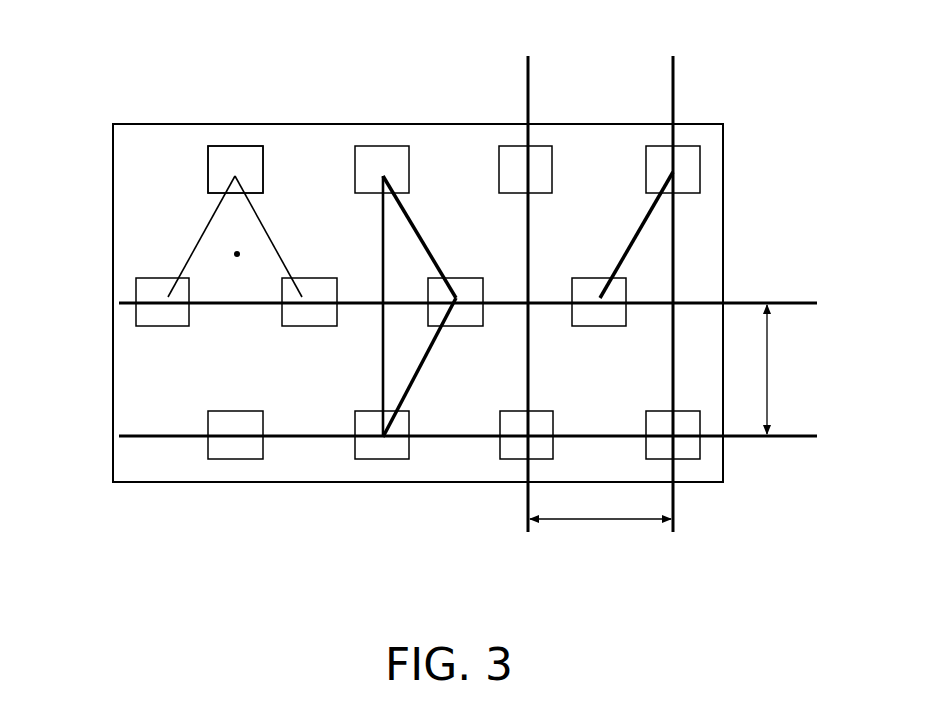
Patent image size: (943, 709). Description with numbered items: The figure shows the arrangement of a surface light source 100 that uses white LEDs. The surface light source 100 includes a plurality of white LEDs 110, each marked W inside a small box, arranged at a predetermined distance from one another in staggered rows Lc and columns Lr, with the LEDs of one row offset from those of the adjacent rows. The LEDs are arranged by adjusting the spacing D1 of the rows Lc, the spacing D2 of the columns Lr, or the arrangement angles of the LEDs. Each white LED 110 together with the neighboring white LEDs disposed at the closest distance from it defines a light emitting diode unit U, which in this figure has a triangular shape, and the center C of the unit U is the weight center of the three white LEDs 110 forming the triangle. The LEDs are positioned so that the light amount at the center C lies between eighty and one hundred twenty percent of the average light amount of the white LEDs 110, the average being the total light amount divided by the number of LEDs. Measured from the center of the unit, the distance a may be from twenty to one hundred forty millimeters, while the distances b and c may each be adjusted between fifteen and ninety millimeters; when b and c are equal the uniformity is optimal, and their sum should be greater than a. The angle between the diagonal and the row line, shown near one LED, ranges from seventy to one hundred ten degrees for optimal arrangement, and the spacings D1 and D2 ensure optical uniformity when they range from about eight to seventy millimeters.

The surface light source 100 is at (400, 93).
The white LED 110 is at (237, 147).
The center C is at (238, 252).
The light emitting diode unit U is at (196, 240).
The distance a is at (383, 247).
The distance b is at (423, 240).
The diagonal distance between pixels c is at (430, 362).
The row Lc is at (484, 368).
The column Lr is at (600, 309).
The spacing of rows D1 is at (784, 369).
The spacing of columns D2 is at (600, 503).